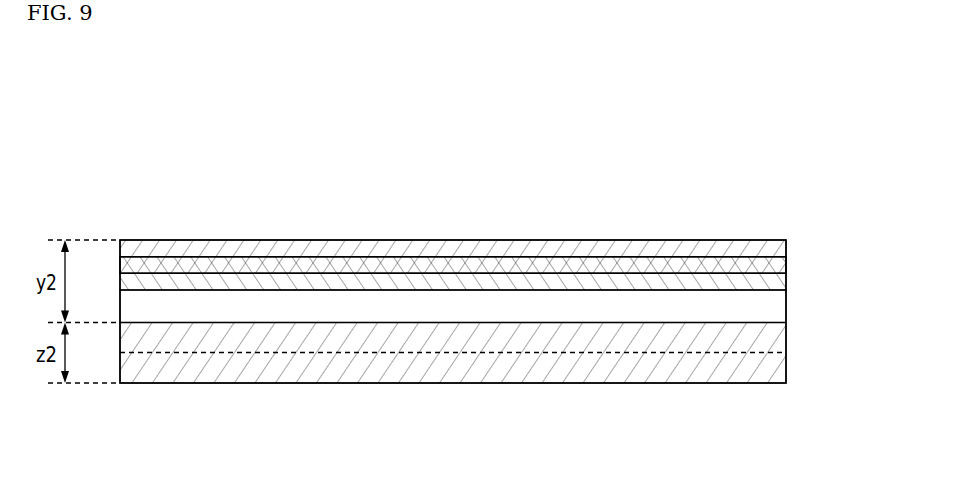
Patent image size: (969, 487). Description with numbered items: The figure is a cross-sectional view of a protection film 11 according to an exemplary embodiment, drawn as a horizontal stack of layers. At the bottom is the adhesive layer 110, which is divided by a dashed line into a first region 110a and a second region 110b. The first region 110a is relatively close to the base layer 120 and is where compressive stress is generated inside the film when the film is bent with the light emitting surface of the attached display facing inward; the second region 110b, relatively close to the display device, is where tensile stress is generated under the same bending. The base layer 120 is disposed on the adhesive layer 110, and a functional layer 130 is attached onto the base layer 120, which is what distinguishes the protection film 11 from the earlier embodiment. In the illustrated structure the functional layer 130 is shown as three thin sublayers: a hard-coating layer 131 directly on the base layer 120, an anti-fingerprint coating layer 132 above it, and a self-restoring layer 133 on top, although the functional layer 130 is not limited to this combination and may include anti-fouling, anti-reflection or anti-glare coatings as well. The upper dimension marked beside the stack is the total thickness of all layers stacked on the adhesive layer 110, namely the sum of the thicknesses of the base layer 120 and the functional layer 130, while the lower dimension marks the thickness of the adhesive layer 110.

The protection film 11 is at (642, 153).
The adhesive layer 110 is at (867, 330).
The first region 110a is at (777, 347).
The second region 110b is at (777, 362).
The base layer 120 is at (777, 308).
The functional layer 130 is at (859, 233).
The hard-coating layer 131 is at (776, 283).
The anti-fingerprint coating layer 132 is at (776, 265).
The self-restoring layer 133 is at (776, 247).